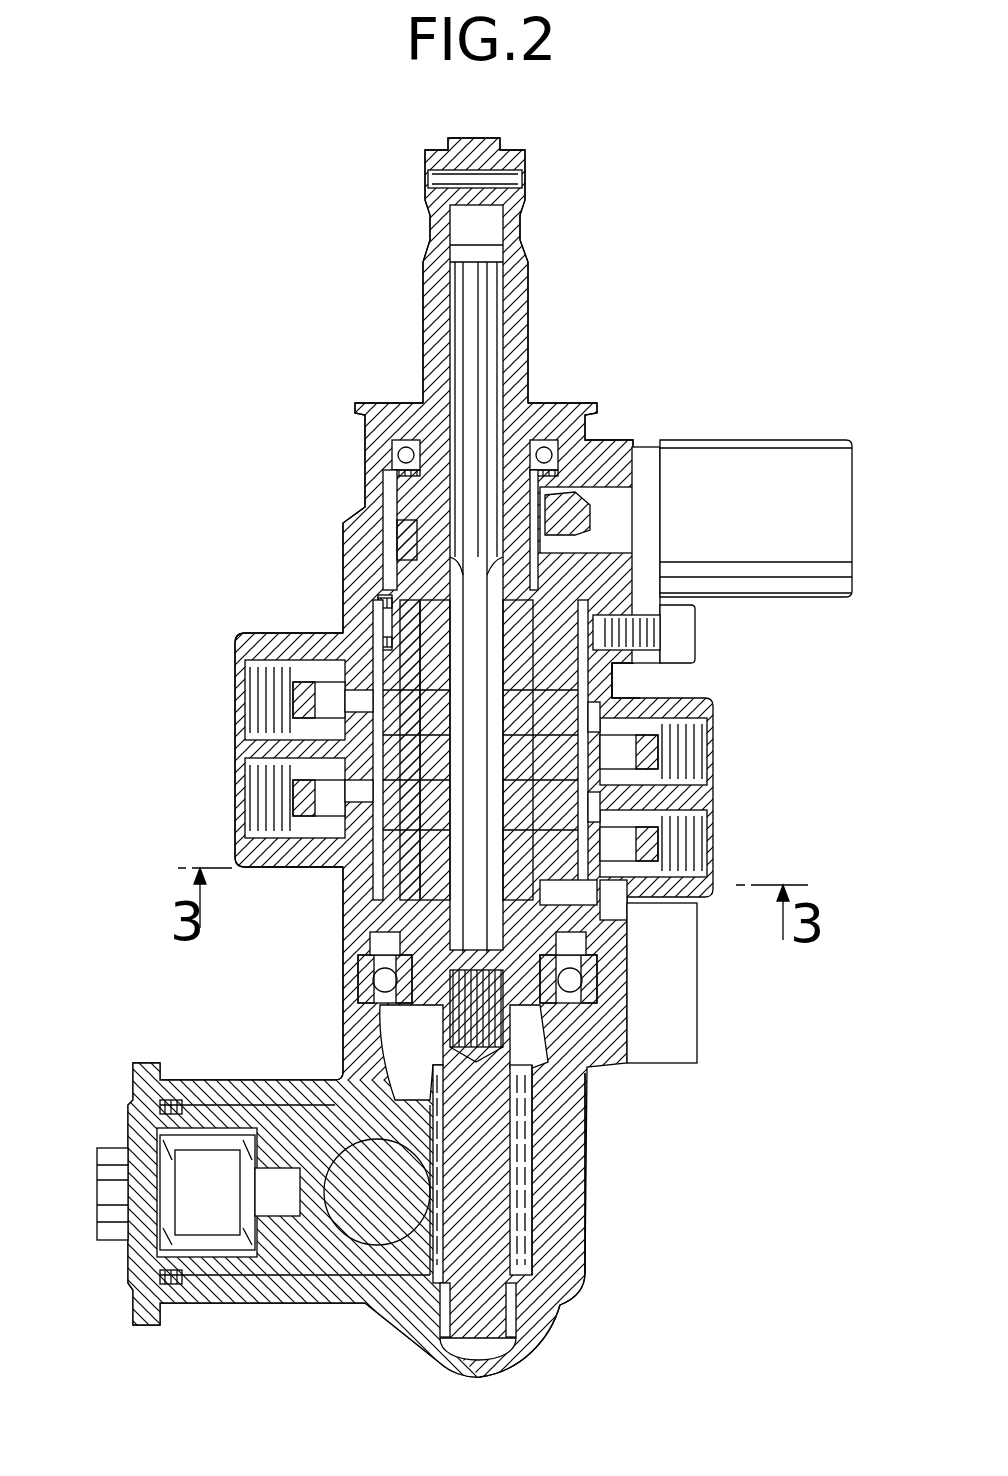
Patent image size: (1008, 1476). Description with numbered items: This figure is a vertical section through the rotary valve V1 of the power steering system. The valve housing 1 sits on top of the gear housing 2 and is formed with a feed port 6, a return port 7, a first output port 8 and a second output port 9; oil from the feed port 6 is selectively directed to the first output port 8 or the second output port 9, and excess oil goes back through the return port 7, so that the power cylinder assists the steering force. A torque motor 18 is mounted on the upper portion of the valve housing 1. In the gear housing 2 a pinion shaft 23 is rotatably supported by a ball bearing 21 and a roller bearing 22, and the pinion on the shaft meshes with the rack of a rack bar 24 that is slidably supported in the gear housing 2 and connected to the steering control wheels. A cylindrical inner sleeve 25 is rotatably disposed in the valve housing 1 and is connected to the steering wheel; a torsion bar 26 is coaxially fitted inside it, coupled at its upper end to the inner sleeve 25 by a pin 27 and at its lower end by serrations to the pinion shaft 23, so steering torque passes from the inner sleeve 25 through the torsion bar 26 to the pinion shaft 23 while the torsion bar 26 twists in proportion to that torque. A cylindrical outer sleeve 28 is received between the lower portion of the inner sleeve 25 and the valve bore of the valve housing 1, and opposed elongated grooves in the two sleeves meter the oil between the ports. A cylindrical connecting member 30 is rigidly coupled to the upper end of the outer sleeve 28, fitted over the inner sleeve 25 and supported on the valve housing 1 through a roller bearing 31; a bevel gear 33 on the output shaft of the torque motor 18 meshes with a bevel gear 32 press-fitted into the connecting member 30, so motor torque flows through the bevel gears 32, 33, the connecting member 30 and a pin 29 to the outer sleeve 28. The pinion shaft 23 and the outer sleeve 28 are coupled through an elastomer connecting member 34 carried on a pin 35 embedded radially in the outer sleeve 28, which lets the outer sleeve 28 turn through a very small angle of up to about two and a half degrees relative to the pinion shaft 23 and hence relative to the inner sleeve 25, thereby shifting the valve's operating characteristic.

The valve housing 1 is at (343, 548).
The gear housing 2 is at (331, 1067).
The feed port 6 is at (268, 822).
The return port 7 is at (270, 735).
The first output port 8 is at (706, 762).
The second output port 9 is at (706, 872).
The torque motor 18 is at (780, 527).
The ball bearing 21 is at (362, 968).
The roller bearing 22 is at (516, 1312).
The pinion shaft 23 is at (535, 1144).
The rack bar 24 is at (392, 1260).
The inner sleeve 25 is at (529, 354).
The torsion bar 26 is at (478, 318).
The pin 27 is at (505, 177).
The outer sleeve 28 is at (372, 905).
The pin 29 is at (380, 700).
The connecting member 30 is at (403, 470).
The roller bearing 31 is at (385, 612).
The bevel gear 32 is at (410, 522).
The bevel gear 33 is at (562, 452).
The elastomer connecting member 34 is at (597, 896).
The pin 35 is at (600, 912).
The rotary valve V1 is at (285, 629).